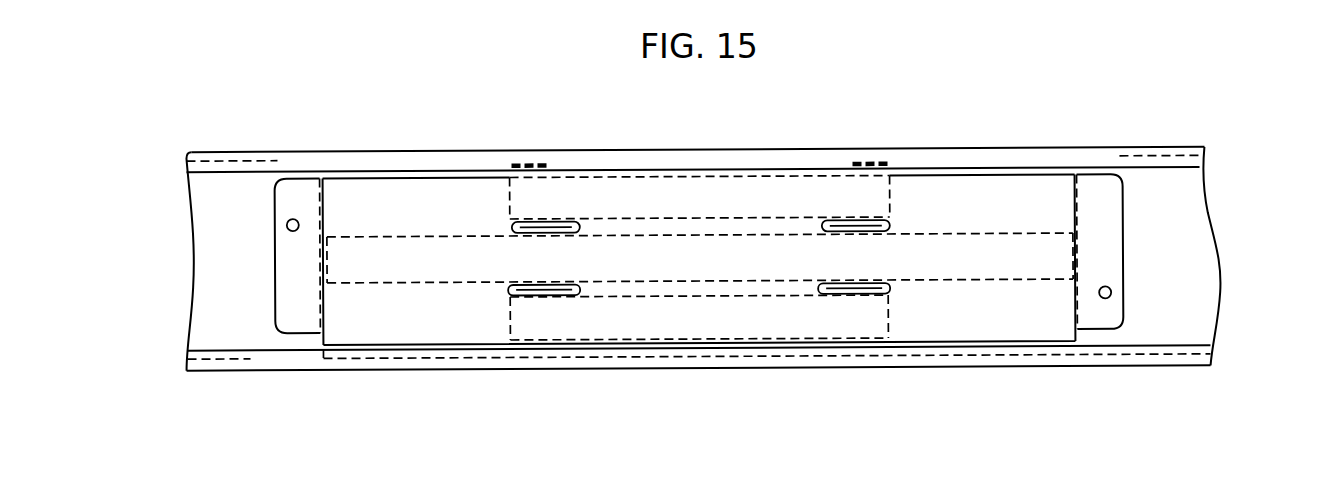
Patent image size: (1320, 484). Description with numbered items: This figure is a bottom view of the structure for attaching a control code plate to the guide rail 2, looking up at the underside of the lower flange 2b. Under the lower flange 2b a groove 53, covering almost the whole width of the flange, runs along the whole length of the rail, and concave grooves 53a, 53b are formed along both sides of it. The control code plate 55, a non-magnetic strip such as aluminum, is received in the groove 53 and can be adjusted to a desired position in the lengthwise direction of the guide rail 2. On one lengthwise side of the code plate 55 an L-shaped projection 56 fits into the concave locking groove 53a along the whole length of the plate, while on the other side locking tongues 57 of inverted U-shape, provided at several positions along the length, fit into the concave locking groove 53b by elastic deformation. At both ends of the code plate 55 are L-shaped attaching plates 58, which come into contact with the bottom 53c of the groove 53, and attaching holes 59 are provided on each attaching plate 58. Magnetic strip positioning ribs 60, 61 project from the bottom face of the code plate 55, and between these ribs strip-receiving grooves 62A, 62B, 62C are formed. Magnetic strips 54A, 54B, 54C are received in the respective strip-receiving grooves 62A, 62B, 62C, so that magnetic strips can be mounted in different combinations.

The guide rail 2 is at (948, 140).
The lower flange 2b is at (952, 371).
The groove 53 is at (1165, 178).
The concave locking groove 53a is at (1160, 347).
The concave locking groove 53b is at (1187, 168).
The bottom of the groove 53c is at (1190, 262).
The magnetic strip 54A is at (672, 325).
The magnetic strip 54B is at (453, 272).
The magnetic strip 54C is at (757, 190).
The control code plate 55 is at (992, 186).
The L-shaped projection 56 is at (777, 357).
The locking tongue 57 is at (525, 160).
The attaching plate 58 is at (287, 293).
The attaching hole 59 is at (287, 224).
The magnetic strip positioning rib 60 is at (540, 298).
The magnetic strip positioning rib 61 is at (518, 220).
The strip-receiving groove 62A is at (814, 330).
The strip-receiving groove 62B is at (617, 278).
The strip-receiving groove 62C is at (646, 183).